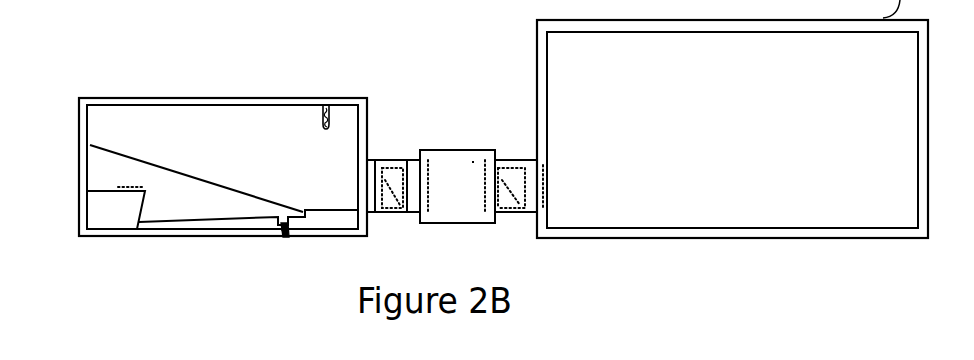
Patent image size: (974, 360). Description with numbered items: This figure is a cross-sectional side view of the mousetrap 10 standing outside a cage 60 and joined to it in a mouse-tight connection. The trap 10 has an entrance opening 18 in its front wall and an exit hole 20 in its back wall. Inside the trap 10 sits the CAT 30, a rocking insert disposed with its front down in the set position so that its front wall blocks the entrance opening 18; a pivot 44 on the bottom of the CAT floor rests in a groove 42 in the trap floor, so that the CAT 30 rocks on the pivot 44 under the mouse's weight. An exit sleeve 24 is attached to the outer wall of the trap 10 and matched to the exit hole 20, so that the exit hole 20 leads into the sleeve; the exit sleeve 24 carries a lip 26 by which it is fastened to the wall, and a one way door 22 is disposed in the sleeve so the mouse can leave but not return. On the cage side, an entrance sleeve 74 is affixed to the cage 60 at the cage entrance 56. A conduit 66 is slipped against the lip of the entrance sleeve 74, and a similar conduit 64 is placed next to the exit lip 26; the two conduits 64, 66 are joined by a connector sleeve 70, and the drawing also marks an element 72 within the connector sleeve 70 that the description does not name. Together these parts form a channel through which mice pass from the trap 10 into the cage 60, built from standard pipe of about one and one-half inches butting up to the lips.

The mousetrap 10 is at (153, 99).
The entrance opening 18 is at (79, 182).
The exit hole 20 is at (358, 177).
The one way door 22 is at (388, 198).
The exit sleeve 24 is at (384, 168).
The lip 26 is at (370, 162).
The CAT 30 is at (213, 186).
The groove 42 is at (287, 237).
The pivot 44 is at (282, 237).
The cage entrance 56 is at (544, 190).
The cage 60 is at (537, 56).
The conduit 64 is at (407, 160).
The conduit 66 is at (503, 161).
The connector sleeve 70 is at (445, 151).
The divider 72 is at (489, 161).
The entrance sleeve 74 is at (511, 169).